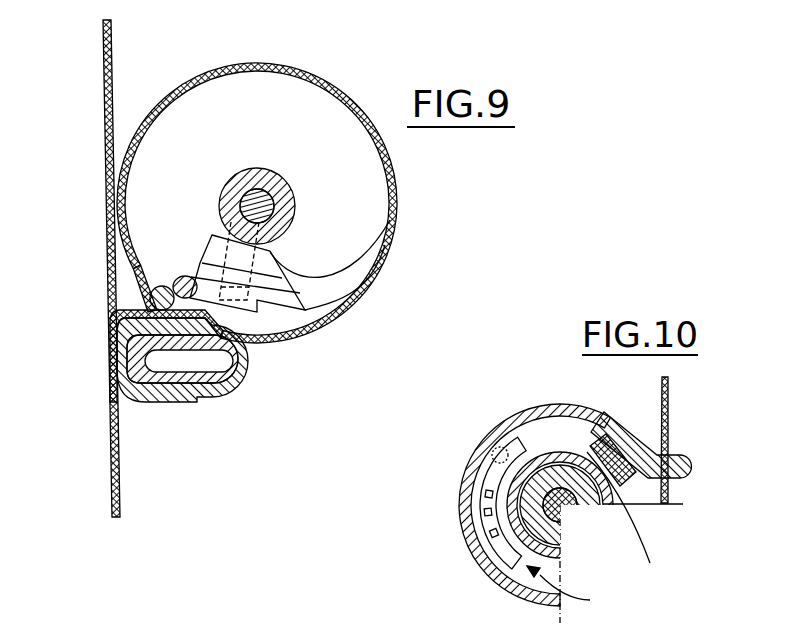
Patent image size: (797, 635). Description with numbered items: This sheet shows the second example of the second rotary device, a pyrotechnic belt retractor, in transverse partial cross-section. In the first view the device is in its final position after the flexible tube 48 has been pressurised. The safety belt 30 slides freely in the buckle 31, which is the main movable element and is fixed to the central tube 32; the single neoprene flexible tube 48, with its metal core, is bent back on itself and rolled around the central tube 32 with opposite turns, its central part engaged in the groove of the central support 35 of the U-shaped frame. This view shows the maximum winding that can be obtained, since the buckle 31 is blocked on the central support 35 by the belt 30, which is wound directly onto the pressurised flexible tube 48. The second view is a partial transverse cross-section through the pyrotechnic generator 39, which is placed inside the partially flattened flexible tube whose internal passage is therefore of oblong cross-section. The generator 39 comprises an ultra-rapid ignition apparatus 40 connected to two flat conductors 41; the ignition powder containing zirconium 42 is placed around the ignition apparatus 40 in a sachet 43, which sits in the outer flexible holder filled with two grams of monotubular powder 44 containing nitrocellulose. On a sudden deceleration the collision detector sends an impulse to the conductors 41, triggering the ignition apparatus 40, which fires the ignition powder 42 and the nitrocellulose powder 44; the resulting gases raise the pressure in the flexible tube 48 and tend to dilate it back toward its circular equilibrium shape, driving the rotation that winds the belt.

In FIG. 9, the safety belt 30 is at (112, 437).
In FIG. 9, the buckle 31 is at (150, 300).
In FIG. 9, the central tube 32 is at (252, 170).
In FIG. 9, the central support 35 is at (168, 392).
In FIG. 9, the flexible tube 48 is at (143, 197).
In FIG. 10, the pyrotechnic generator 39 is at (566, 593).
In FIG. 10, the ultra-rapid ignition apparatus 40 is at (508, 445).
In FIG. 10, the flat conductors 41 is at (651, 540).
In FIG. 10, the ignition powder containing zirconium 42 is at (482, 484).
In FIG. 10, the sachet 43 is at (470, 505).
In FIG. 10, the monotubular powder containing nitrocellulose 44 is at (490, 565).